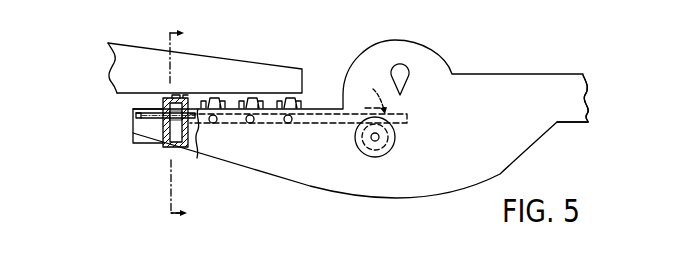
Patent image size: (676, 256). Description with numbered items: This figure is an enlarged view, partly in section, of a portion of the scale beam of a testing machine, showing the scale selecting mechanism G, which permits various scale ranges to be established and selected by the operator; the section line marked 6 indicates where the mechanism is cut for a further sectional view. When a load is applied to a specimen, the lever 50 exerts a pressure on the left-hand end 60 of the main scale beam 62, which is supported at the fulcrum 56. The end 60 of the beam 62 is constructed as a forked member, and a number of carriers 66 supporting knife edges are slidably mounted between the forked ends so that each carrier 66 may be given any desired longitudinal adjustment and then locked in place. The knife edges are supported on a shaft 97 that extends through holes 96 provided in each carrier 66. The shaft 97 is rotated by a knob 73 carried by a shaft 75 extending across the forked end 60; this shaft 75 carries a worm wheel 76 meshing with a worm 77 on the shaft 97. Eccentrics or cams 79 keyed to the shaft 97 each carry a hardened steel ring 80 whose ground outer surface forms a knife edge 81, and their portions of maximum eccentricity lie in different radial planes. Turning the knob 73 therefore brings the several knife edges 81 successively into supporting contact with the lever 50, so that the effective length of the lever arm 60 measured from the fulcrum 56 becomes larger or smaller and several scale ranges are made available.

The lever 50 is at (258, 69).
The fulcrum 56 is at (403, 73).
The end of the beam 60 is at (149, 137).
The main scale beam 62 is at (571, 90).
The carriers 66 is at (222, 108).
The knob 73 is at (391, 148).
The shaft 75 is at (373, 141).
The worm wheel 76 is at (366, 140).
The worm 77 is at (371, 96).
The eccentrics or cams 79 is at (170, 106).
The hardened steel ring 80 is at (187, 99).
The knife edge 81 is at (176, 97).
The holes 96 is at (163, 119).
The shaft 97 is at (138, 117).
The scale selecting mechanism G is at (323, 50).
The section line 6- 6 is at (184, 119).